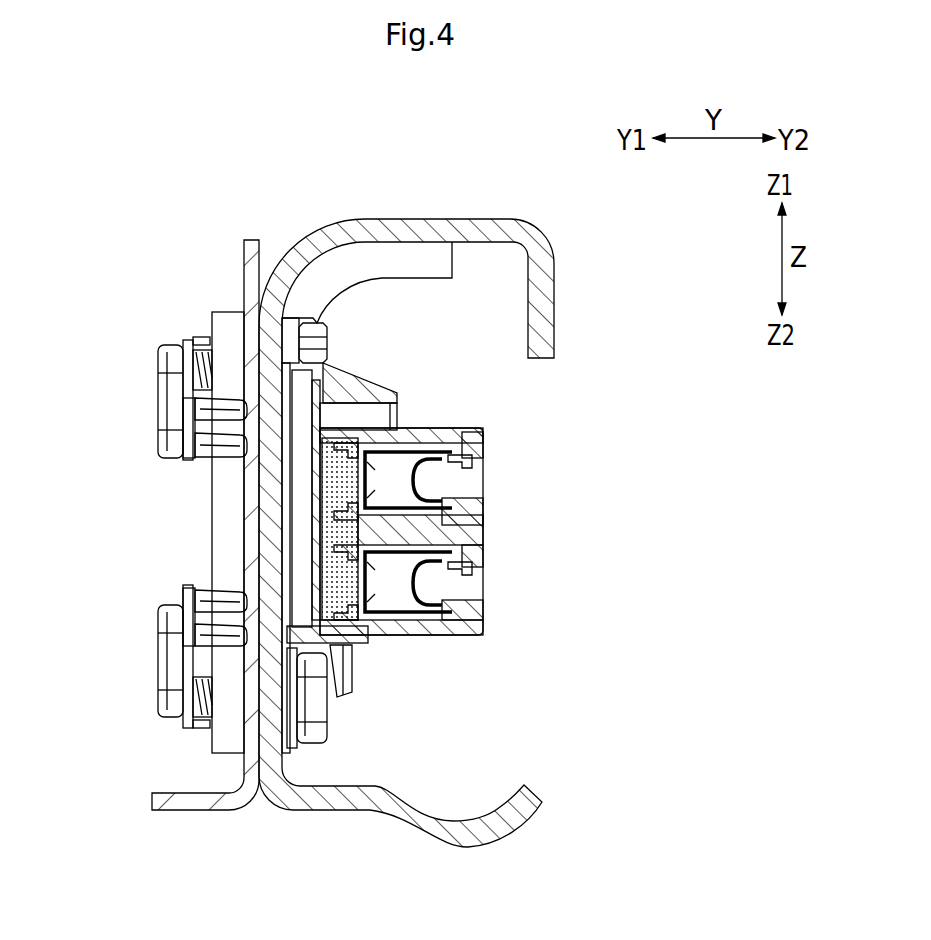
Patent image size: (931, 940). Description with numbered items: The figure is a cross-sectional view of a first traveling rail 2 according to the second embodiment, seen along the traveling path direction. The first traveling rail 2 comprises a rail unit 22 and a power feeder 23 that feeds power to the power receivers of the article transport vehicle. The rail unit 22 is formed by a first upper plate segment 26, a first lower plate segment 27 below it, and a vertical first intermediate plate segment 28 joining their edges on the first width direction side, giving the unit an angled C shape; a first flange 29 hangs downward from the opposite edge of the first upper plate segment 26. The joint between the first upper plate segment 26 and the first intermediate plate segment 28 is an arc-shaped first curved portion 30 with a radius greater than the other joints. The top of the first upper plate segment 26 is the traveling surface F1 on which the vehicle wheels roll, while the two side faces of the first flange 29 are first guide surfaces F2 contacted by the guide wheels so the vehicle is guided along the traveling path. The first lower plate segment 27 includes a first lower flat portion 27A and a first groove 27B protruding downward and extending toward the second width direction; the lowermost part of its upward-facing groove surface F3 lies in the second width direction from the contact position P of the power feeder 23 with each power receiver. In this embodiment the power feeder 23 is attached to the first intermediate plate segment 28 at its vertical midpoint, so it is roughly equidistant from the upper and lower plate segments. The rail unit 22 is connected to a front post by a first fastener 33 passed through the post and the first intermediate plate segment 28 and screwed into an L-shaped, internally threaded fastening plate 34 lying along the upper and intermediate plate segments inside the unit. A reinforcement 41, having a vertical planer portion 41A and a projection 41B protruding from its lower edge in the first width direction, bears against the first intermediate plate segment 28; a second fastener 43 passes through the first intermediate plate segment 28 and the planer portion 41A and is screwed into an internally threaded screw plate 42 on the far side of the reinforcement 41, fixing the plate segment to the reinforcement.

The first traveling rail 2 is at (405, 530).
The rail unit 22 is at (405, 530).
The power feeder 23 is at (405, 637).
The first upper plate segment 26 is at (433, 219).
The first lower plate segment 27 is at (486, 855).
The first lower flat portion 27A is at (330, 810).
The first groove 27B is at (490, 833).
The first intermediate plate segment 28 is at (270, 520).
The first flange 29 is at (548, 275).
The first curved portion 30 is at (292, 280).
The first fastener 33 is at (165, 403).
The fastening plate 34 is at (365, 262).
The reinforcement 41 is at (160, 565).
The planer portion 41A is at (244, 284).
The projection 41B is at (177, 800).
The screw plate 42 is at (222, 738).
The second fastener 43 is at (313, 355).
The contact position P is at (417, 482).
The traveling surface F1 is at (462, 218).
The first guide surfaces F2 is at (527, 320).
The groove surface F3 is at (454, 820).